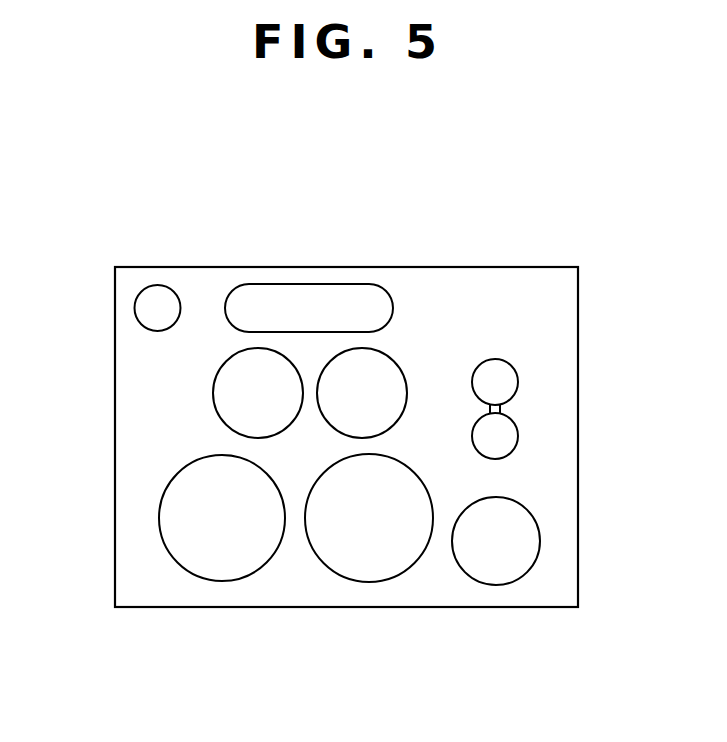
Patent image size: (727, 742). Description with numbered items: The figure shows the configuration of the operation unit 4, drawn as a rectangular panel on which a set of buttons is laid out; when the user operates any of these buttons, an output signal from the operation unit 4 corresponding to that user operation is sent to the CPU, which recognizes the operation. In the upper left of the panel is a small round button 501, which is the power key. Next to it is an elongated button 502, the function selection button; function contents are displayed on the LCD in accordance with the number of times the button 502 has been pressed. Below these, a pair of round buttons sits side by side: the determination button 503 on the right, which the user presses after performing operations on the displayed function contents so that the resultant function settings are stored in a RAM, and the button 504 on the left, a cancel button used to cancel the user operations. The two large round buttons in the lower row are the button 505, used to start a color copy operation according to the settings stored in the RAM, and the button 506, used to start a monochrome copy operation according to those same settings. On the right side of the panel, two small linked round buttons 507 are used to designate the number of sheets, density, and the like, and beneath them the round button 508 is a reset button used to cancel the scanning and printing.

The operation unit 4 is at (545, 607).
The button 501 is at (149, 291).
The button 502 is at (274, 288).
The determination button 503 is at (395, 386).
The button 504 is at (216, 391).
The button 505 is at (237, 572).
The button 506 is at (395, 575).
The buttons 507 is at (518, 432).
The button 508 is at (530, 535).